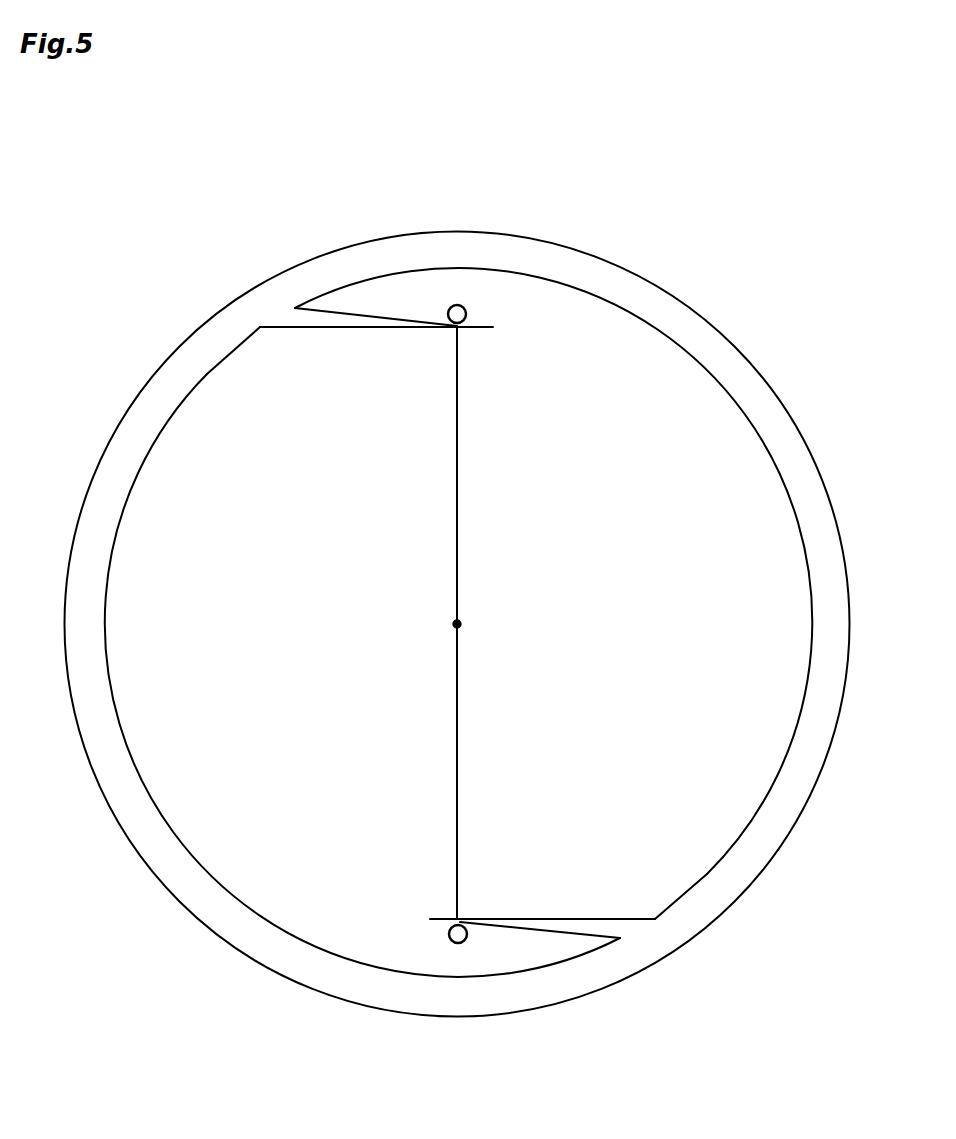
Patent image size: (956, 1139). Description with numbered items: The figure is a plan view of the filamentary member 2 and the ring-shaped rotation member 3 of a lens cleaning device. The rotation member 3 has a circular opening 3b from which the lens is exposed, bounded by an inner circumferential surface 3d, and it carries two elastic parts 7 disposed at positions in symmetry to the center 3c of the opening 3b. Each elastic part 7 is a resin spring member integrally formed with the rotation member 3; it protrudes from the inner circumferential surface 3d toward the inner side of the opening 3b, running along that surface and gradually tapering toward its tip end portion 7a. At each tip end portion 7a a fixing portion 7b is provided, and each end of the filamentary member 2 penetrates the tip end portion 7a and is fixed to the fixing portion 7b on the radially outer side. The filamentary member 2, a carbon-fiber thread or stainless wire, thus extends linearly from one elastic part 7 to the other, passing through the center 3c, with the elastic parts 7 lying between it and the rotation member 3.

The filamentary member 2 is at (459, 497).
The rotation member 3 is at (457, 588).
The opening 3b is at (459, 613).
The inner circumferential surface 3d is at (620, 313).
The center 3c is at (462, 622).
The elastic part 7 is at (457, 626).
The tip end portion 7a is at (493, 327).
The fixing portion 7b is at (457, 304).